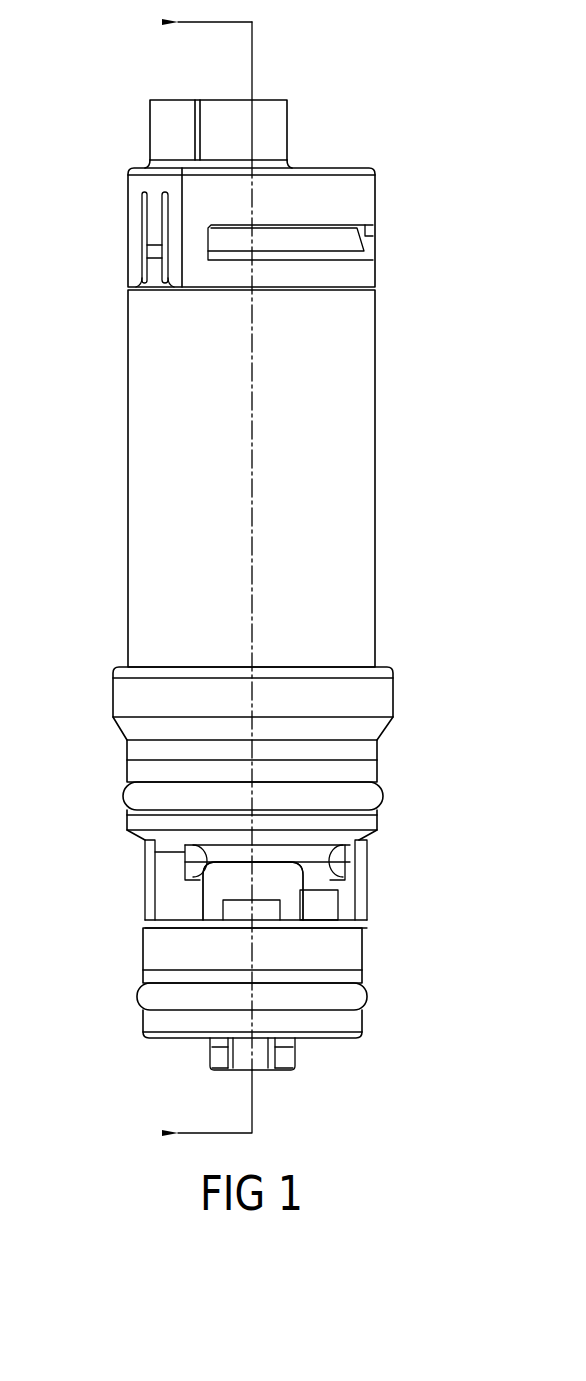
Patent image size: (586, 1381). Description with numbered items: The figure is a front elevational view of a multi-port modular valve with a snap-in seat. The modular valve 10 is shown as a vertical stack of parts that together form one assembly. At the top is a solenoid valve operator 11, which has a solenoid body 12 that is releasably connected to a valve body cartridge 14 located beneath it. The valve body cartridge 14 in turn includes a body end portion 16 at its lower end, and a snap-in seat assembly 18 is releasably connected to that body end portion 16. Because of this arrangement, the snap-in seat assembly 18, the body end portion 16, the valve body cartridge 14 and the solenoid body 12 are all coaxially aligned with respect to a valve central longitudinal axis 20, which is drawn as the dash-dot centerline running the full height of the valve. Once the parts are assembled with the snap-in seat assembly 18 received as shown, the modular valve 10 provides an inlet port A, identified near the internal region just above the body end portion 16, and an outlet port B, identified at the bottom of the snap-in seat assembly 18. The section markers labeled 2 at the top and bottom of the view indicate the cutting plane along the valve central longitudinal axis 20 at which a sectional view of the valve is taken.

The section line 2- 2 is at (197, 580).
The modular valve 10 is at (462, 166).
The solenoid valve operator 11 is at (402, 332).
The solenoid body 12 is at (358, 513).
The valve body cartridge 14 is at (350, 835).
The body end portion 16 is at (155, 950).
The snap-in seat assembly 18 is at (378, 1016).
The valve central longitudinal axis 20 is at (252, 491).
The inlet port A is at (213, 902).
The outlet port B is at (285, 1072).